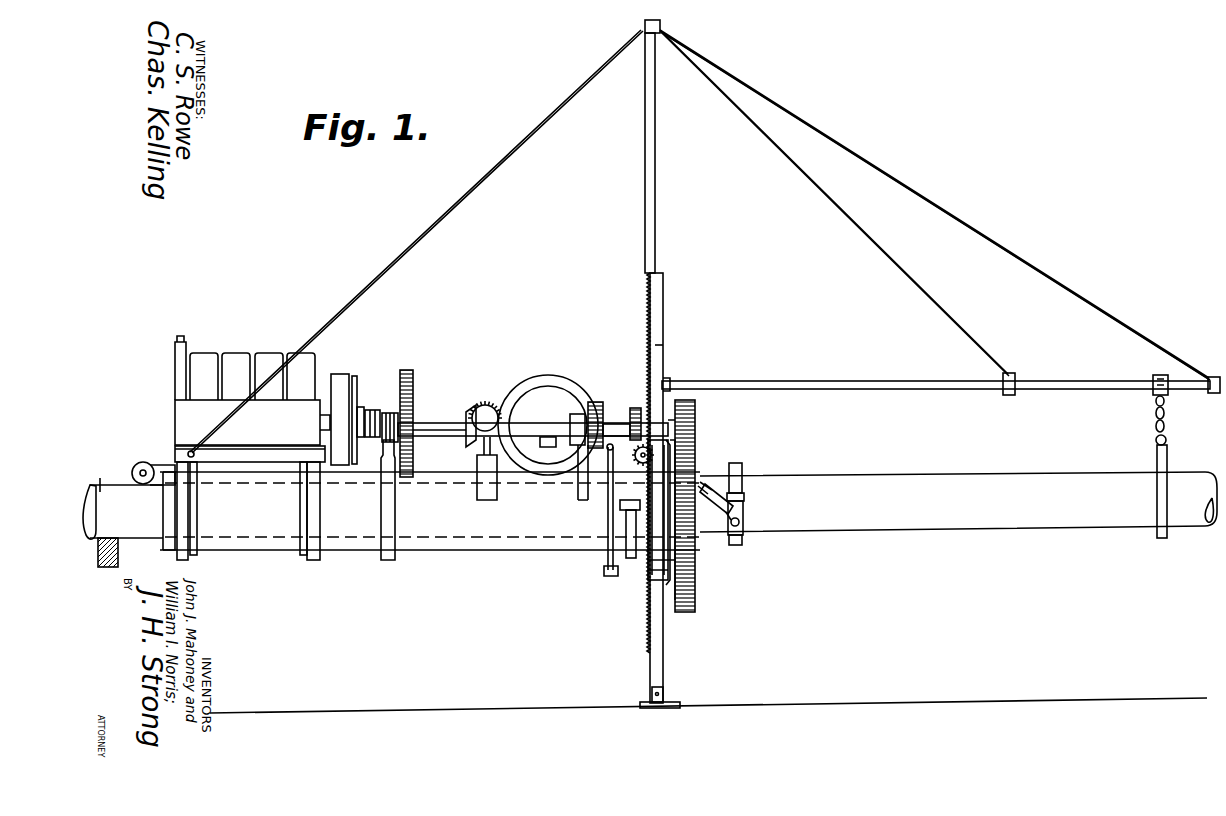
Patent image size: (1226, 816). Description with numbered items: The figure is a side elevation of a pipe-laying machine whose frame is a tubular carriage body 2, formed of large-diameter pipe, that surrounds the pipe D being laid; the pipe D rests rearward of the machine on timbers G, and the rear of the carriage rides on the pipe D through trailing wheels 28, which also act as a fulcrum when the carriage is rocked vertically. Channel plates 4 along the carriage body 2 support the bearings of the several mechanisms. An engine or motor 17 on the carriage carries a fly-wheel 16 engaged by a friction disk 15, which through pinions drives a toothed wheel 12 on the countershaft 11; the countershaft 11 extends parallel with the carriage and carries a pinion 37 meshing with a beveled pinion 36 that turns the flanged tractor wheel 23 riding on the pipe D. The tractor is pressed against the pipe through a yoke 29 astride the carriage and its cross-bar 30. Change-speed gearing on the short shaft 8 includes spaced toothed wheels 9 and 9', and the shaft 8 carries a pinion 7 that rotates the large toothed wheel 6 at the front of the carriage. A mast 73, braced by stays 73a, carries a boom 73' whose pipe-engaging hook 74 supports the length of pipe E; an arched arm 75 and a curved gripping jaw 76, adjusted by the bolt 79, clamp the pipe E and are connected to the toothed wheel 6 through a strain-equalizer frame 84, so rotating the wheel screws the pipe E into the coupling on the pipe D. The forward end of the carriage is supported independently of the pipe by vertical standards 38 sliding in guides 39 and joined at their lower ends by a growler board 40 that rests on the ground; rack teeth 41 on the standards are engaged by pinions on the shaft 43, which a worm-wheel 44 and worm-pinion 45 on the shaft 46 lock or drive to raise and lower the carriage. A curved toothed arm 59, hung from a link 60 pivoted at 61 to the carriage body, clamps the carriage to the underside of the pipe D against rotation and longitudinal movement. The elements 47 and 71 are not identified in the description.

The carriage body 2 is at (513, 520).
The length of pipe E is at (940, 472).
The pipe D is at (94, 475).
The timbers G is at (118, 555).
The trailing wheels 28 is at (140, 462).
The engine or motor 17 is at (236, 358).
The channel plates 4 is at (360, 570).
The fly-wheel 16 is at (341, 376).
The friction disk 15 is at (355, 376).
The toothed wheel 12 is at (407, 370).
The countershaft 11 is at (535, 414).
The shaft section 47 is at (412, 440).
The beveled pinion 36 is at (466, 408).
The pinion 37 is at (486, 400).
The tractor wheel 23 is at (545, 375).
The shaft 46 is at (549, 447).
The worm-wheel 44 is at (583, 480).
The toothed wheel 9' is at (599, 412).
The short shaft 8 is at (615, 424).
The toothed wheel 9 is at (632, 409).
The worm-pinion 45 is at (619, 445).
The shaft 43 is at (640, 462).
The yoke 29 is at (606, 555).
The cross-bar 30 is at (604, 574).
The pivot 61 is at (620, 506).
The link 60 is at (626, 522).
The curved arm 59 is at (646, 568).
The guides 39 is at (664, 555).
The mast 73 is at (700, 236).
The stays 73a is at (830, 178).
The rack teeth 41 is at (650, 320).
The vertical standards 38 is at (655, 345).
The growler board 40 is at (650, 702).
The boom 73' is at (941, 375).
The pipe-engaging hook 74 is at (1156, 458).
The pinion 7 is at (695, 418).
The toothed wheel 6 is at (695, 600).
The frame 84 is at (718, 482).
The arched arm 75 is at (742, 487).
The adjusting bolt 79 is at (744, 497).
The bracket 71 is at (743, 513).
The gripping jaw 76 is at (742, 540).